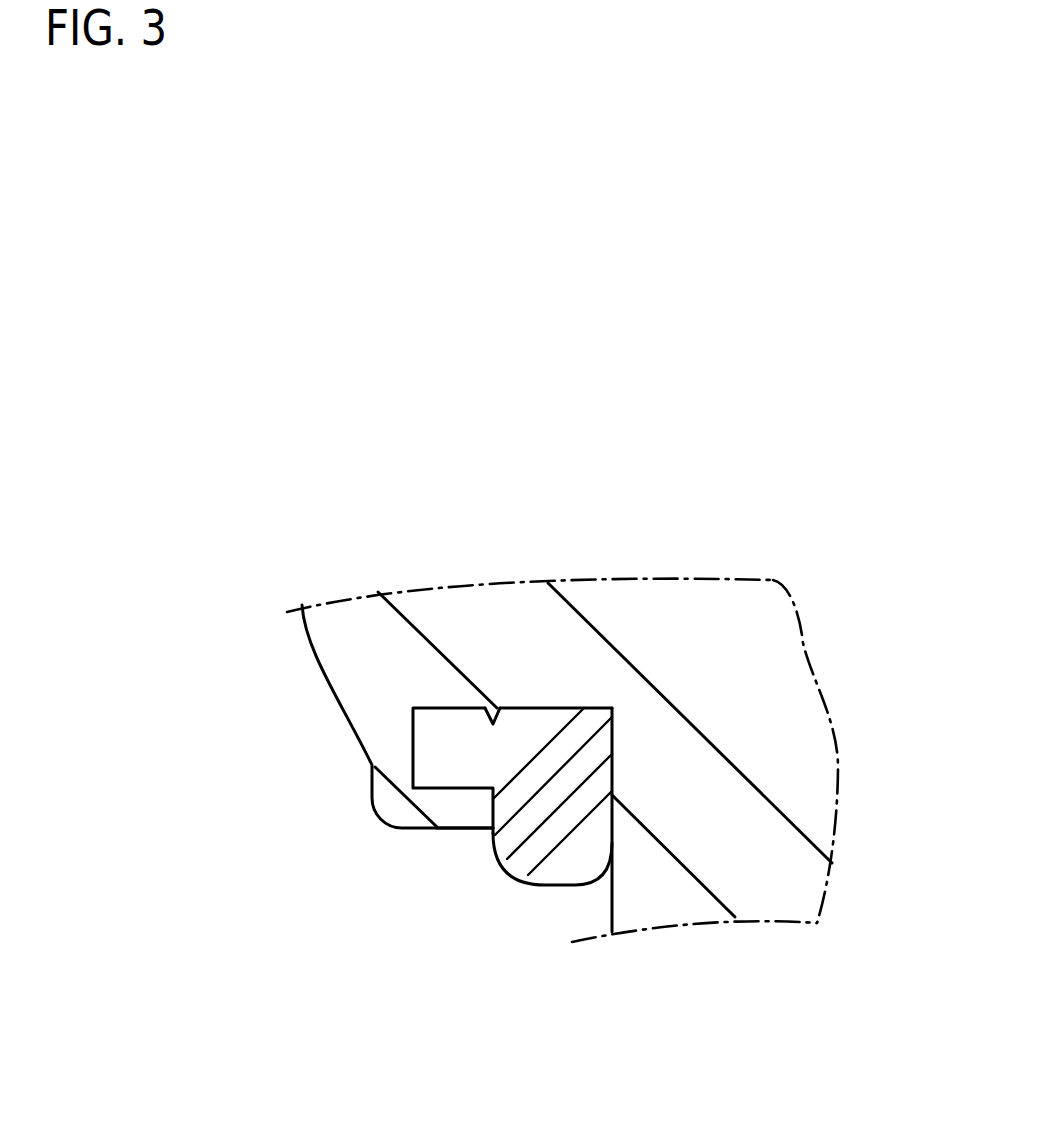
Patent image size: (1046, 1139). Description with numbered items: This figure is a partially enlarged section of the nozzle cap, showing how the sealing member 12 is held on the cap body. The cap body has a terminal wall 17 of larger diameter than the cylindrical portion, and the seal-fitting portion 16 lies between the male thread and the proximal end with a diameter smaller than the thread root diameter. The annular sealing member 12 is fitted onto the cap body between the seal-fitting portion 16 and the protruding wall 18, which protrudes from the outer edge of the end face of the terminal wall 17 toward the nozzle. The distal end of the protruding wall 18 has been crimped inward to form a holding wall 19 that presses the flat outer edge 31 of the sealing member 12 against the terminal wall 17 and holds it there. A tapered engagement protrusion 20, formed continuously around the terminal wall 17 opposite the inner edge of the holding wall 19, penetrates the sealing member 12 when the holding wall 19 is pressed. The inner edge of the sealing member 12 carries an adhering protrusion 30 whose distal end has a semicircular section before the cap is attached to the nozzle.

The sealing member 12 is at (557, 772).
The seal-fitting portion 16 is at (678, 842).
The terminal wall 17 is at (483, 633).
The protruding wall 18 is at (383, 740).
The holding wall 19 is at (462, 818).
The engagement protrusion 20 is at (496, 719).
The adhering protrusion 30 is at (558, 867).
The outer edge 31 is at (470, 768).